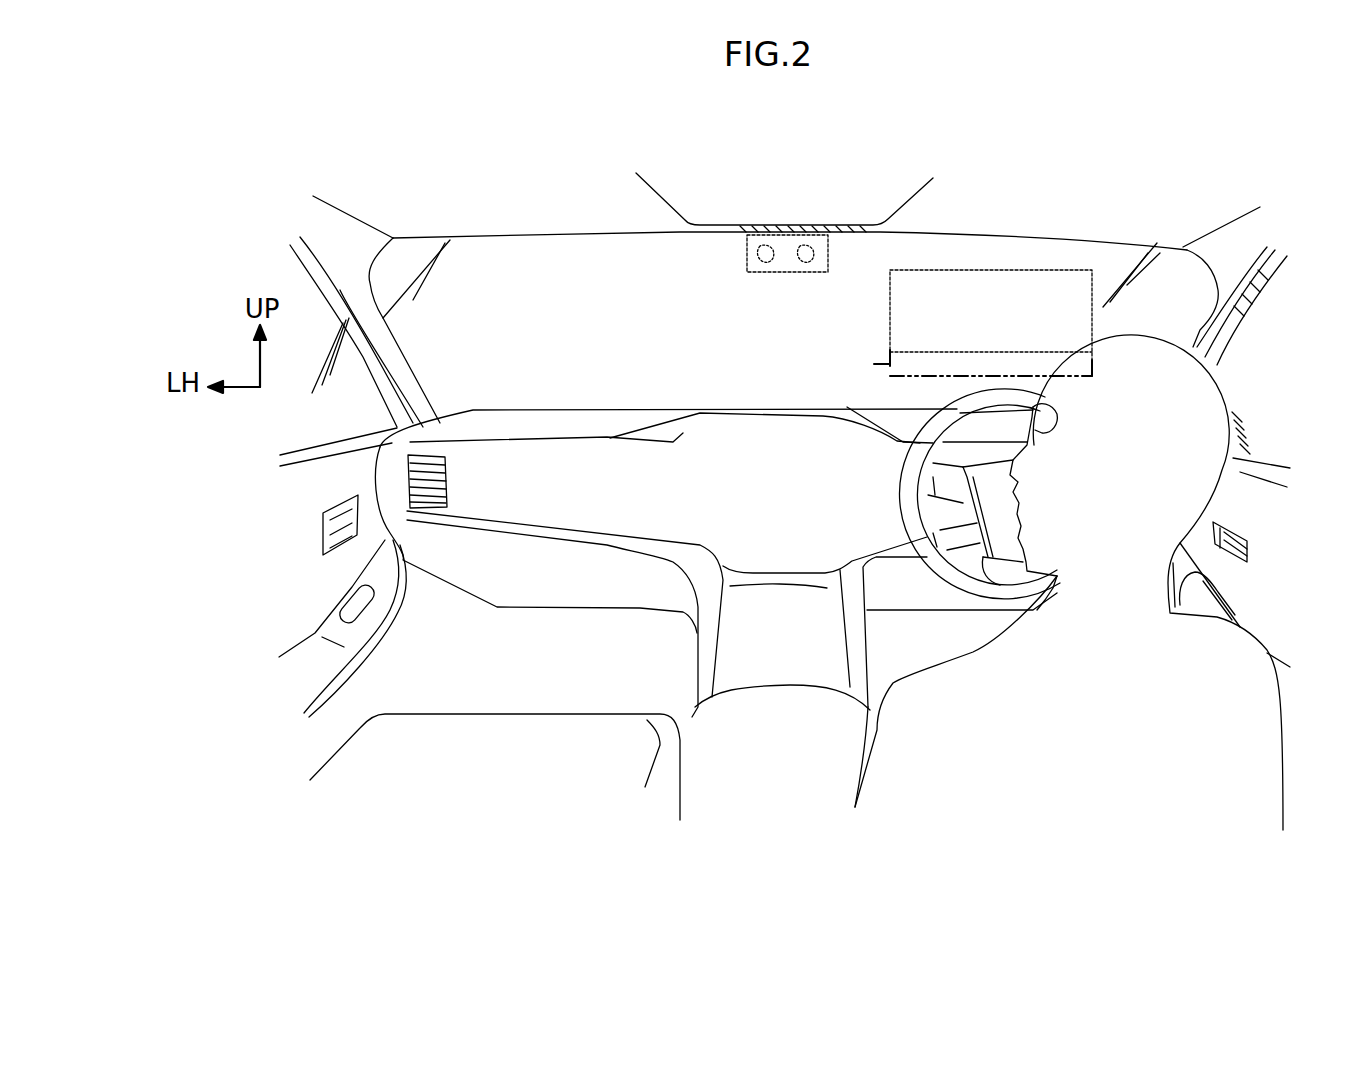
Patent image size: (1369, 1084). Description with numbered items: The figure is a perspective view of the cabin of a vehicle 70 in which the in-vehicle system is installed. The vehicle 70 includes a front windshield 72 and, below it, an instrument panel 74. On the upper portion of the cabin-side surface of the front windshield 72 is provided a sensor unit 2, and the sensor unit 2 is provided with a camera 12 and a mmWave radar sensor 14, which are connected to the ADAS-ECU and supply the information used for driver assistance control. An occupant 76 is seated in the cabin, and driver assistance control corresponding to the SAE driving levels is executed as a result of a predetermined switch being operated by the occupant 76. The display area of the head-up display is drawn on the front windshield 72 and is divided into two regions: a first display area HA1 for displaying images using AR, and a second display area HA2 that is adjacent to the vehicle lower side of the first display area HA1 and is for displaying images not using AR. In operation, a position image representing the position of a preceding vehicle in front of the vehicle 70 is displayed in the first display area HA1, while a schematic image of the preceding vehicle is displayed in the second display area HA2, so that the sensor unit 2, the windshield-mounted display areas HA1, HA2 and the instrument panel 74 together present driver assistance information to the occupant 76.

The sensor unit 2 is at (746, 276).
The camera 12 is at (761, 235).
The mmWave radar sensor 14 is at (812, 236).
The vehicle 70 is at (1029, 212).
The front windshield 72 is at (549, 246).
The instrument panel 74 is at (555, 447).
The occupant 76 is at (1237, 380).
The first display area HA1 is at (1088, 318).
The second display area HA2 is at (868, 368).